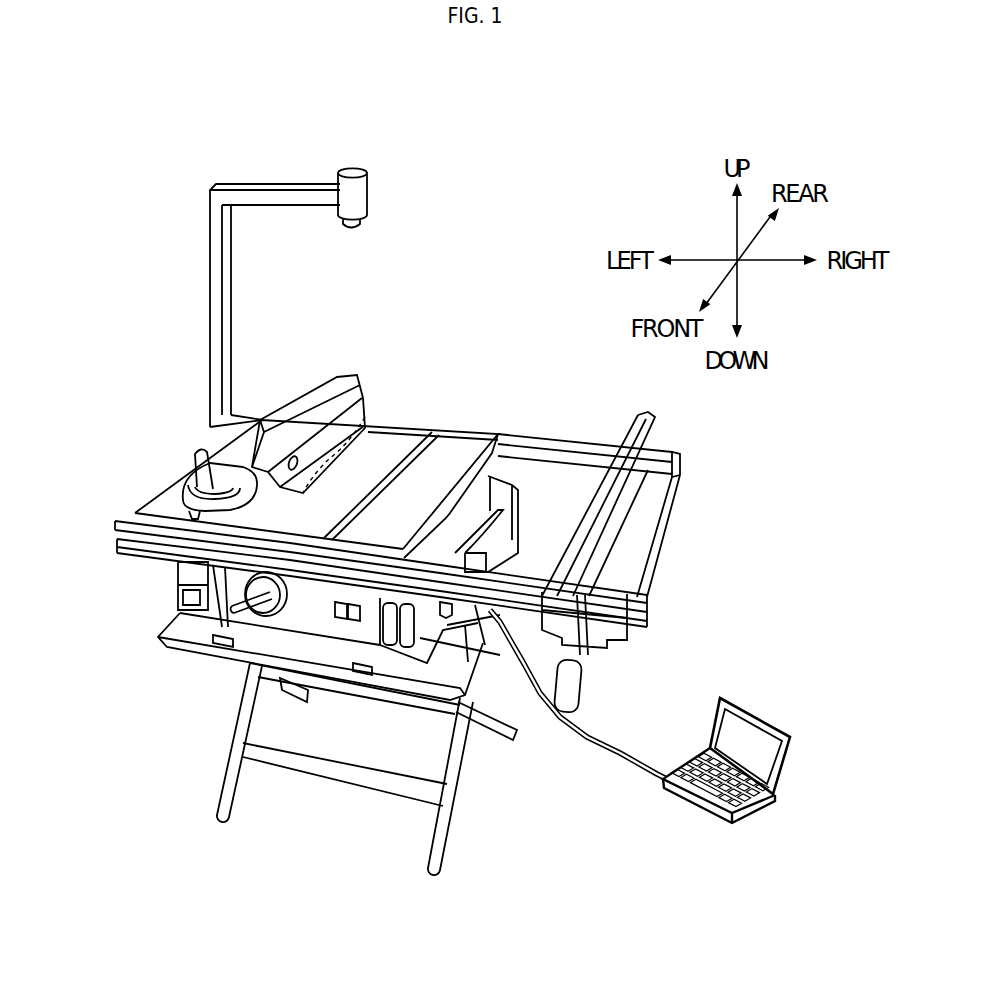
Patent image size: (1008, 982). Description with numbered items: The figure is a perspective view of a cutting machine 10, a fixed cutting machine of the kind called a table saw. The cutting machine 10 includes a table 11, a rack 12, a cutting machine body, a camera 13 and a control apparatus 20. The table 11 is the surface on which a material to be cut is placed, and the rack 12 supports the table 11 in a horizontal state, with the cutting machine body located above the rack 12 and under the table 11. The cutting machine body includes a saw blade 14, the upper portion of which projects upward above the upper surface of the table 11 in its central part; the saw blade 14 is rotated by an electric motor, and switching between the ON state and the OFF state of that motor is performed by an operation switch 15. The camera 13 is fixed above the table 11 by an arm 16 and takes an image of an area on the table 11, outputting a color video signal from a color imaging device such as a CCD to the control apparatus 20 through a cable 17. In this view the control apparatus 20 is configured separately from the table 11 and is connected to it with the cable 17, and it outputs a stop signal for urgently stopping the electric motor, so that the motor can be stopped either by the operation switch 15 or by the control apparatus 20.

The cutting machine 10 is at (652, 154).
The table 11 is at (452, 450).
The rack 12 is at (253, 697).
The camera 13 is at (340, 175).
The saw blade 14 is at (367, 417).
The operation switch 15 is at (183, 595).
The arm 16 is at (217, 295).
The cable 17 is at (613, 751).
The control apparatus 20 is at (739, 717).